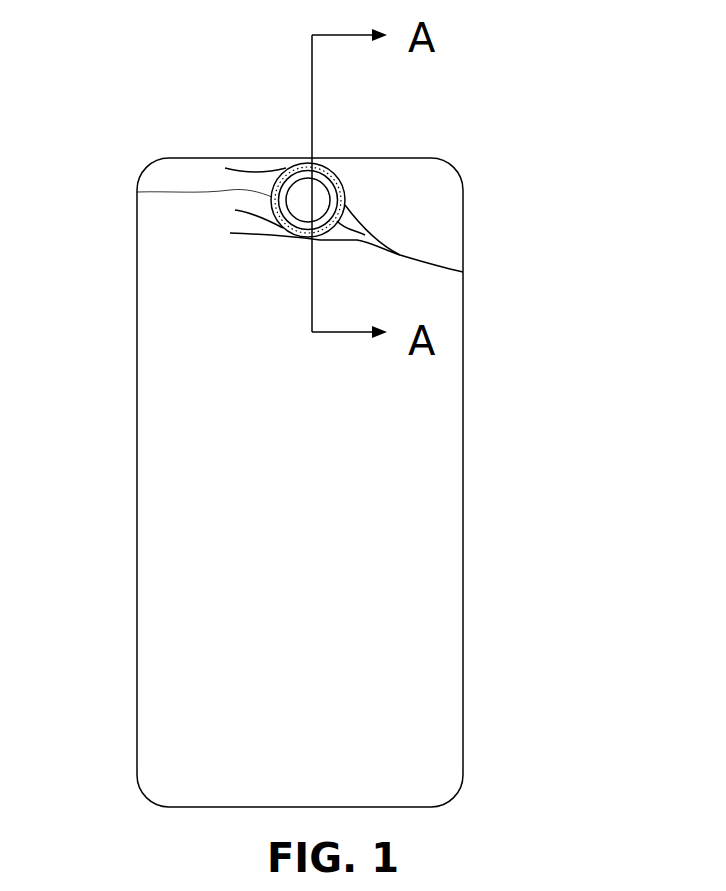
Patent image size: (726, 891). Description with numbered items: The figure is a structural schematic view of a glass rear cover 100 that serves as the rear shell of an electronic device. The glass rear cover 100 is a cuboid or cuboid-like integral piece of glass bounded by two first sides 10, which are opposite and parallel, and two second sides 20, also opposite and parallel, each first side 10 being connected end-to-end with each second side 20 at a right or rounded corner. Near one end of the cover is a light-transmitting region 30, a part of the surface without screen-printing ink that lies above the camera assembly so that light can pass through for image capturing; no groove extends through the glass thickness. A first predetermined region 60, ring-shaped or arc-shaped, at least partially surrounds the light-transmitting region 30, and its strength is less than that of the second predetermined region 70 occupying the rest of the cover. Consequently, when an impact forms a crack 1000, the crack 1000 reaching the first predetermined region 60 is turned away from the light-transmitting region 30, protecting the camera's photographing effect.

The glass rear cover 100 is at (84, 605).
The first side 10 is at (137, 268).
The second side 20 is at (257, 158).
The light-transmitting region 30 is at (328, 196).
The first predetermined region 60 is at (137, 192).
The second predetermined region 70 is at (377, 170).
The crack 1000 is at (247, 233).